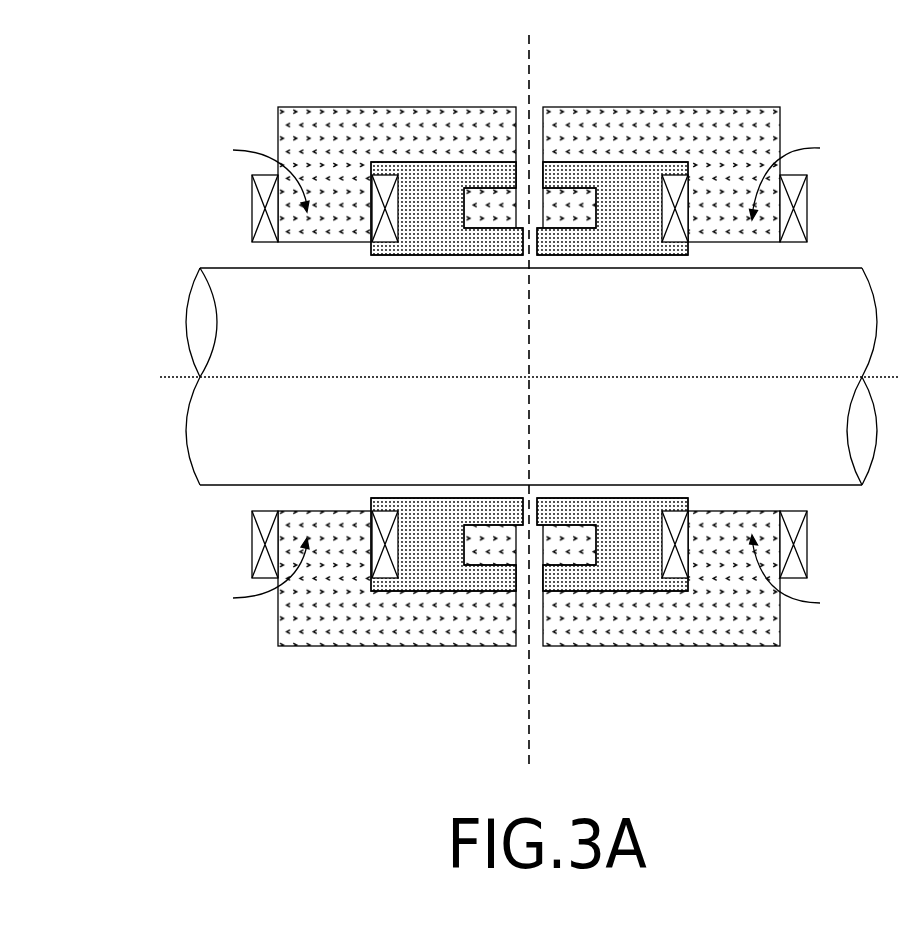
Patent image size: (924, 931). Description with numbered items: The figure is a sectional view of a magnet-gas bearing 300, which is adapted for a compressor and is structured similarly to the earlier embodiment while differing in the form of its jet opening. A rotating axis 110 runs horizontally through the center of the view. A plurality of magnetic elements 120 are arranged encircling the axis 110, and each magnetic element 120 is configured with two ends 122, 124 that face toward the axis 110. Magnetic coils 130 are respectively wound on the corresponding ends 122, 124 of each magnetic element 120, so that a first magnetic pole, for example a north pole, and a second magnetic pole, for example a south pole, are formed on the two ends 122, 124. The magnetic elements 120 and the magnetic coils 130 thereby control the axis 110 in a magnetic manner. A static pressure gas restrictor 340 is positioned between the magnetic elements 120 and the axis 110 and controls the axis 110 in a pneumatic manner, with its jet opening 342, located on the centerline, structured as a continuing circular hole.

The magnet-gas bearing 300 is at (758, 826).
The axis 110 is at (205, 432).
The magnetic element 120 is at (308, 128).
The end of magnetic element 122 is at (244, 377).
The end of magnetic element 124 is at (811, 375).
The magnetic coil 130 is at (383, 178).
The static pressure gas restrictor 340 is at (443, 185).
The jet opening 342 is at (531, 262).